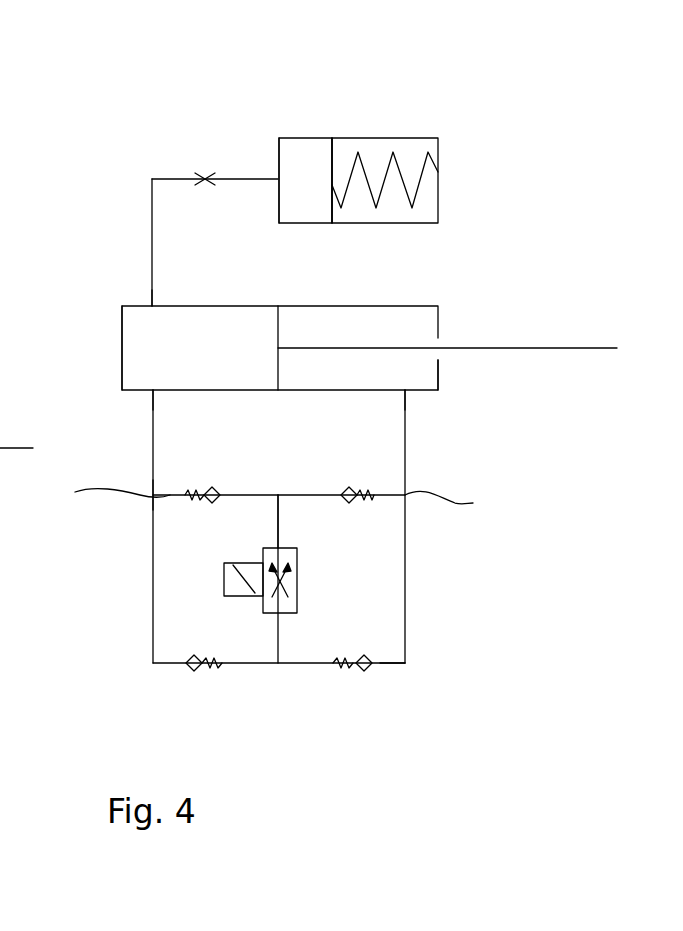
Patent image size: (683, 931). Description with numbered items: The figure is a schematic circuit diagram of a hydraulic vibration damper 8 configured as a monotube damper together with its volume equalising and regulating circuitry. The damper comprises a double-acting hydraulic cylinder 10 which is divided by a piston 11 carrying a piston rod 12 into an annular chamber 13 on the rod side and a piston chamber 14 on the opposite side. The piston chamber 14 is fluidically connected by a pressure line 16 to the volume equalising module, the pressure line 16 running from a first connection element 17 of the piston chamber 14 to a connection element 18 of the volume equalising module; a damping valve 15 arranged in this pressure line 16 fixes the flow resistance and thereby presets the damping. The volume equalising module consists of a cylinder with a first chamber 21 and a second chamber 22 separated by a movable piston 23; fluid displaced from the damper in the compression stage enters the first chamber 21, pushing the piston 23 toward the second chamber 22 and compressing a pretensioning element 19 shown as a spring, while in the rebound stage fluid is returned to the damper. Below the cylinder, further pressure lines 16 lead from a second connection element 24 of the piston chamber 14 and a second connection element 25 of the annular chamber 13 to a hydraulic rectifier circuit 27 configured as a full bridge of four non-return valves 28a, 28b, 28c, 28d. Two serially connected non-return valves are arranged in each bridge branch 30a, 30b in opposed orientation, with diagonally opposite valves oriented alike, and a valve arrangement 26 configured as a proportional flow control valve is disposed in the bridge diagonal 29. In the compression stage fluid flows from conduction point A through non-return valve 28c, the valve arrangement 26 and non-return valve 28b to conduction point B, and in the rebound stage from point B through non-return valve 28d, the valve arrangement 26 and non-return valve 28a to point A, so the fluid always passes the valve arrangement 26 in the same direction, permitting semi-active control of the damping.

The hydraulic vibration damper 8 is at (327, 379).
The double-acting hydraulic cylinder 10 is at (372, 306).
The piston 11 is at (277, 322).
The piston rod 12 is at (525, 350).
The annular chamber 13 is at (427, 378).
The piston chamber 14 is at (128, 345).
The damping valve 15 is at (205, 178).
The pressure line 16 is at (152, 195).
The first connection element 17 is at (150, 304).
The connection element 18 is at (278, 176).
The pretensioning element 19 is at (390, 155).
The first chamber 21 is at (290, 205).
The second chamber 22 is at (428, 207).
The piston 23 is at (332, 150).
The second connection element 24 is at (151, 392).
The second connection element 25 is at (406, 396).
The valve arrangement 26 is at (297, 568).
The hydraulic rectifier circuit 27 is at (424, 643).
The non-return valve 28a is at (195, 488).
The non-return valve 28b is at (370, 487).
The non-return valve 28c is at (215, 668).
The non-return valve 28d is at (349, 668).
The bridge diagonal 29 is at (278, 523).
The bridge branch 30a is at (168, 498).
The bridge branch 30b is at (390, 665).